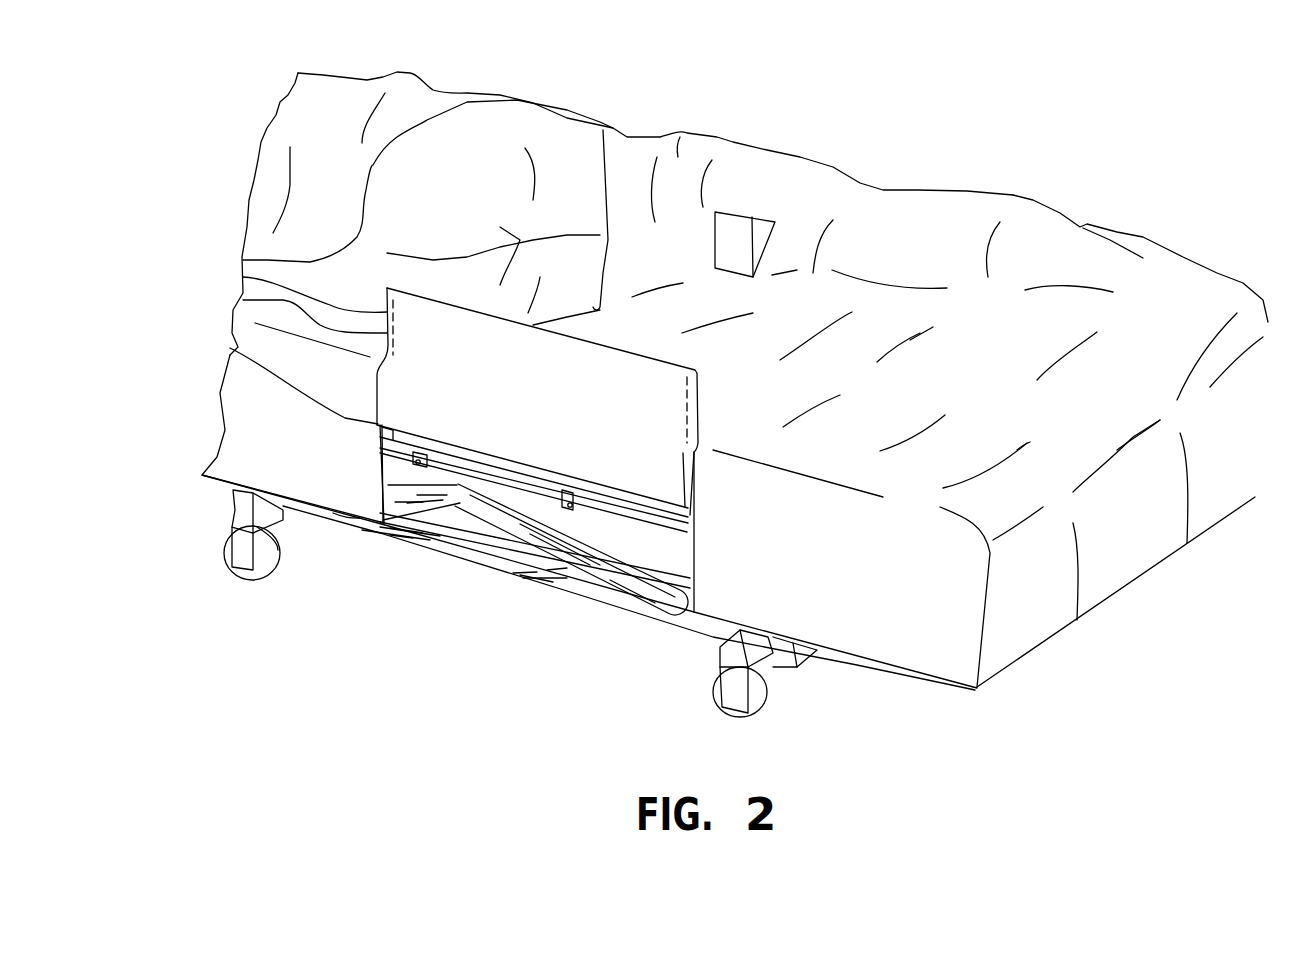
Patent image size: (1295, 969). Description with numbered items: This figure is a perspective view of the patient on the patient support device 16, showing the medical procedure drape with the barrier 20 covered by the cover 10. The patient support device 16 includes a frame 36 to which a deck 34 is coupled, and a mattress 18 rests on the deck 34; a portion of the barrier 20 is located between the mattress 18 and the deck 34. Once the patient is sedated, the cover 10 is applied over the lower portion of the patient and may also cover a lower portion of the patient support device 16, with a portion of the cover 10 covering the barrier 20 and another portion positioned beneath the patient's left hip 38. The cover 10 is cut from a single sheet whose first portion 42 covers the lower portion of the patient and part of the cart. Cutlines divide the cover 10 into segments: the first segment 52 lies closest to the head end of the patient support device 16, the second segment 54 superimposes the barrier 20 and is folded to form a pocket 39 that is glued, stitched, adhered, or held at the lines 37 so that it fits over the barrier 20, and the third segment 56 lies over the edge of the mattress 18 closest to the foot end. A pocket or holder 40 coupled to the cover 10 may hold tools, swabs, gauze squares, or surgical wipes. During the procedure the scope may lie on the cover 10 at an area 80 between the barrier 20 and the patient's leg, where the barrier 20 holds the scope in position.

The cover 10 is at (750, 172).
The patient support device 16 is at (213, 497).
The mattress 18 is at (237, 352).
The barrier 20 is at (597, 500).
The deck 34 is at (503, 500).
The frame 36 is at (355, 530).
The lines 37 is at (243, 277).
The patient's left hip 38 is at (478, 280).
The pocket 39 is at (427, 327).
The pocket or holder 40 is at (737, 233).
The first portion 42 is at (960, 207).
The first segment 52 is at (240, 423).
The second segment 54 is at (532, 406).
The third segment 56 is at (937, 640).
The area 80 is at (728, 348).